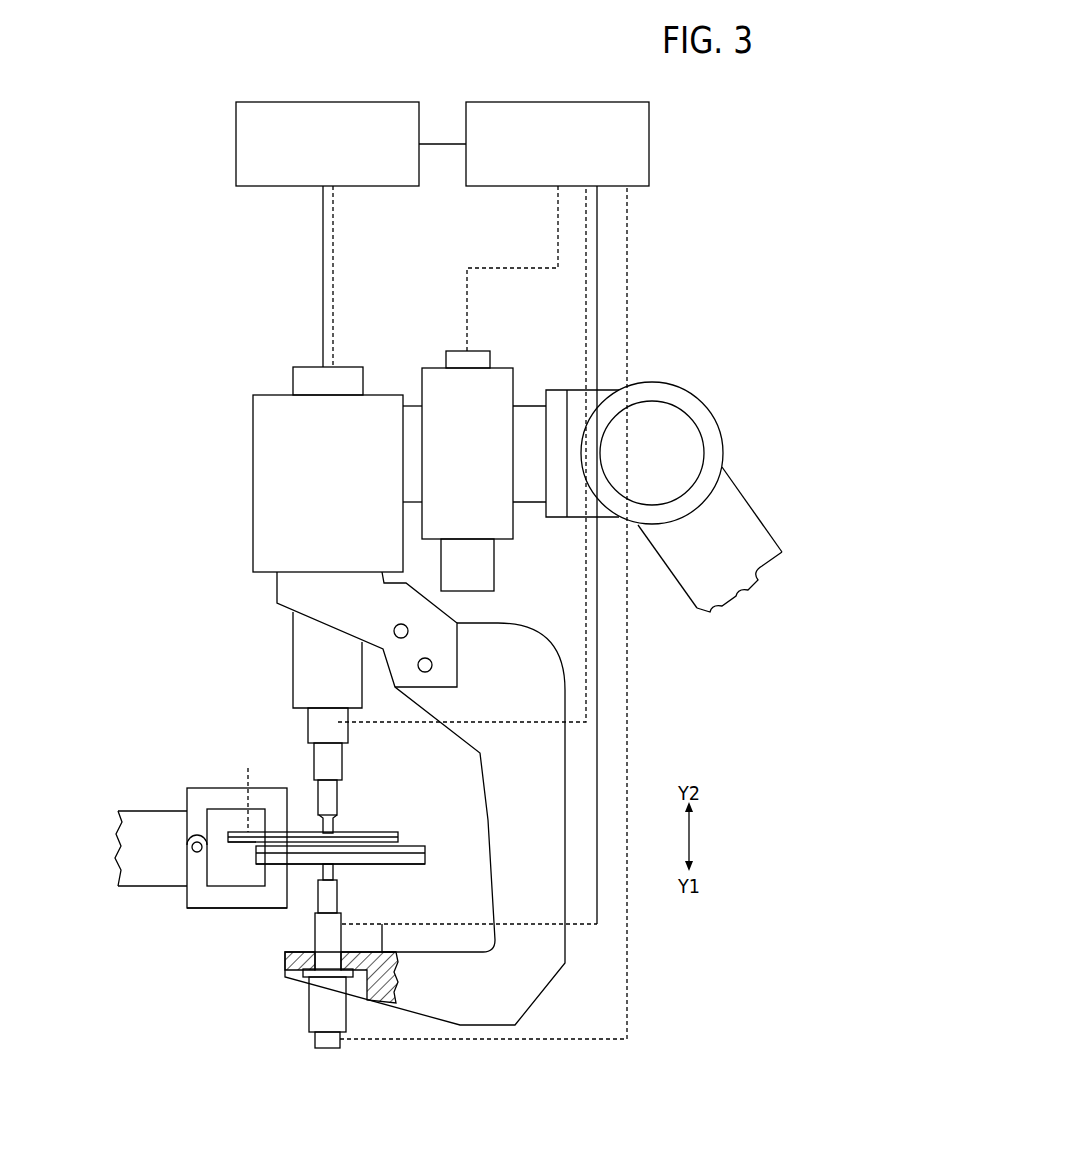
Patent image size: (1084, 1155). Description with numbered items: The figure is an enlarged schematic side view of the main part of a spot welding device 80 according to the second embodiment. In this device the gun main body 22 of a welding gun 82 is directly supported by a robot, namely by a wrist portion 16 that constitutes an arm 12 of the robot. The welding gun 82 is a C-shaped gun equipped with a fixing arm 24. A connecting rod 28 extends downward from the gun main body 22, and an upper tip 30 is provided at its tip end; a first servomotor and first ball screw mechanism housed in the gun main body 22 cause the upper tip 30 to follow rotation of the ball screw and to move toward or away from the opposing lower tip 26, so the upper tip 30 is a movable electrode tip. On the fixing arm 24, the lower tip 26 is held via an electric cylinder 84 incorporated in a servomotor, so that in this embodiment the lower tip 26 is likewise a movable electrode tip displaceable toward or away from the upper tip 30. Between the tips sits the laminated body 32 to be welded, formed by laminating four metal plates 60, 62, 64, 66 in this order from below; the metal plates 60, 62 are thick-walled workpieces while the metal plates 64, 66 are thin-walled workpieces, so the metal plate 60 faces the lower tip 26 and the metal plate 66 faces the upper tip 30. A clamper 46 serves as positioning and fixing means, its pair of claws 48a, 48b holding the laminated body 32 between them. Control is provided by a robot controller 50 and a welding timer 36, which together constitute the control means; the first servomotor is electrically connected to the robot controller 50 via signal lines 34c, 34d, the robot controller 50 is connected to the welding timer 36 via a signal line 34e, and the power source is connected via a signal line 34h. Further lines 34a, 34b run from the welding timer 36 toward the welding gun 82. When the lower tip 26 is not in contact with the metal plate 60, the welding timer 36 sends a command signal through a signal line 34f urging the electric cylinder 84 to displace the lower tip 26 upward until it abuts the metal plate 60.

The spot welding device 80 is at (195, 88).
The robot controller 50 is at (356, 100).
The welding timer 36 is at (580, 100).
The signal line 34e is at (433, 139).
The signal line 34c is at (321, 215).
The signal line 34d is at (335, 239).
The signal line 34h is at (501, 268).
The cable 34a is at (408, 724).
The cable 34b is at (517, 922).
The signal line 34f is at (632, 957).
The welding gun 82 is at (248, 380).
The gun main body 22 is at (265, 492).
The wrist portion 16 is at (503, 531).
The arm 12 is at (728, 398).
The fixing arm 24 is at (532, 985).
The connecting rod 28 is at (303, 667).
The upper tip 30 is at (331, 824).
The laminated body 32 is at (407, 829).
The metal plate 62 is at (425, 847).
The metal plate 60 is at (402, 859).
The lower tip 26 is at (333, 872).
The electric cylinder 84 is at (320, 1008).
The clamper 46 is at (141, 797).
The claw 48b is at (200, 796).
The claw 48a is at (192, 897).
The metal plate 66 is at (249, 788).
The metal plate 64 is at (237, 847).